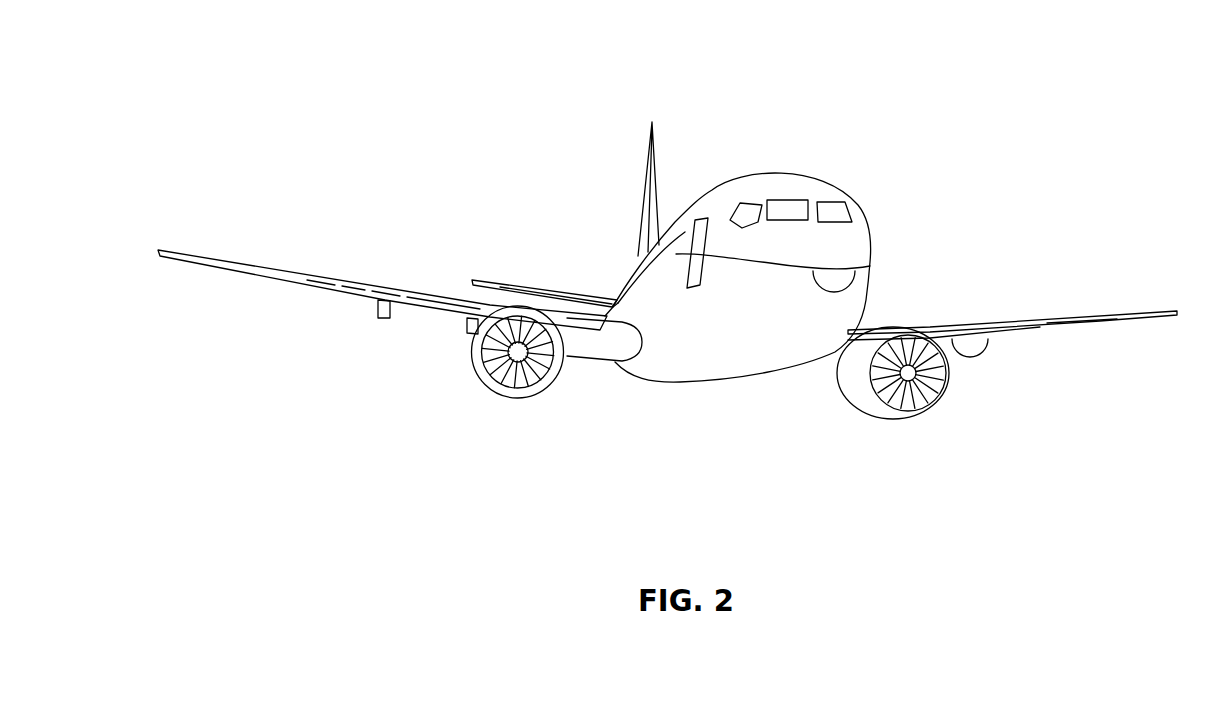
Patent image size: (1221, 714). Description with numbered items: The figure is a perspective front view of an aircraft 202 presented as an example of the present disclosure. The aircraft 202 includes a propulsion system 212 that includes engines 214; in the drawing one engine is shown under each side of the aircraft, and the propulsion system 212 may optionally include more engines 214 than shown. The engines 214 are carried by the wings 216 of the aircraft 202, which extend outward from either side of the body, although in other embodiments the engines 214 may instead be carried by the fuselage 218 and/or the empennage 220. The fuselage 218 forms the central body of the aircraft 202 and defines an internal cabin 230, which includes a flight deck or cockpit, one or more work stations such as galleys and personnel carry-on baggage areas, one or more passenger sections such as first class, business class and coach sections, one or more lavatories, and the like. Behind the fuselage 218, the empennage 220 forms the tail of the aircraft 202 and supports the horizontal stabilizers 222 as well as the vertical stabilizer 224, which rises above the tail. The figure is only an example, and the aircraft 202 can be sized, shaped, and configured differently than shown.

The aircraft 202 is at (417, 73).
The propulsion system 212 is at (456, 361).
The engines 214 is at (513, 398).
The wings 216 is at (296, 277).
The fuselage 218 is at (870, 236).
The empennage 220 is at (635, 262).
The horizontal stabilizers 222 is at (508, 285).
The vertical stabilizer 224 is at (645, 165).
The internal cabin 230 is at (792, 206).